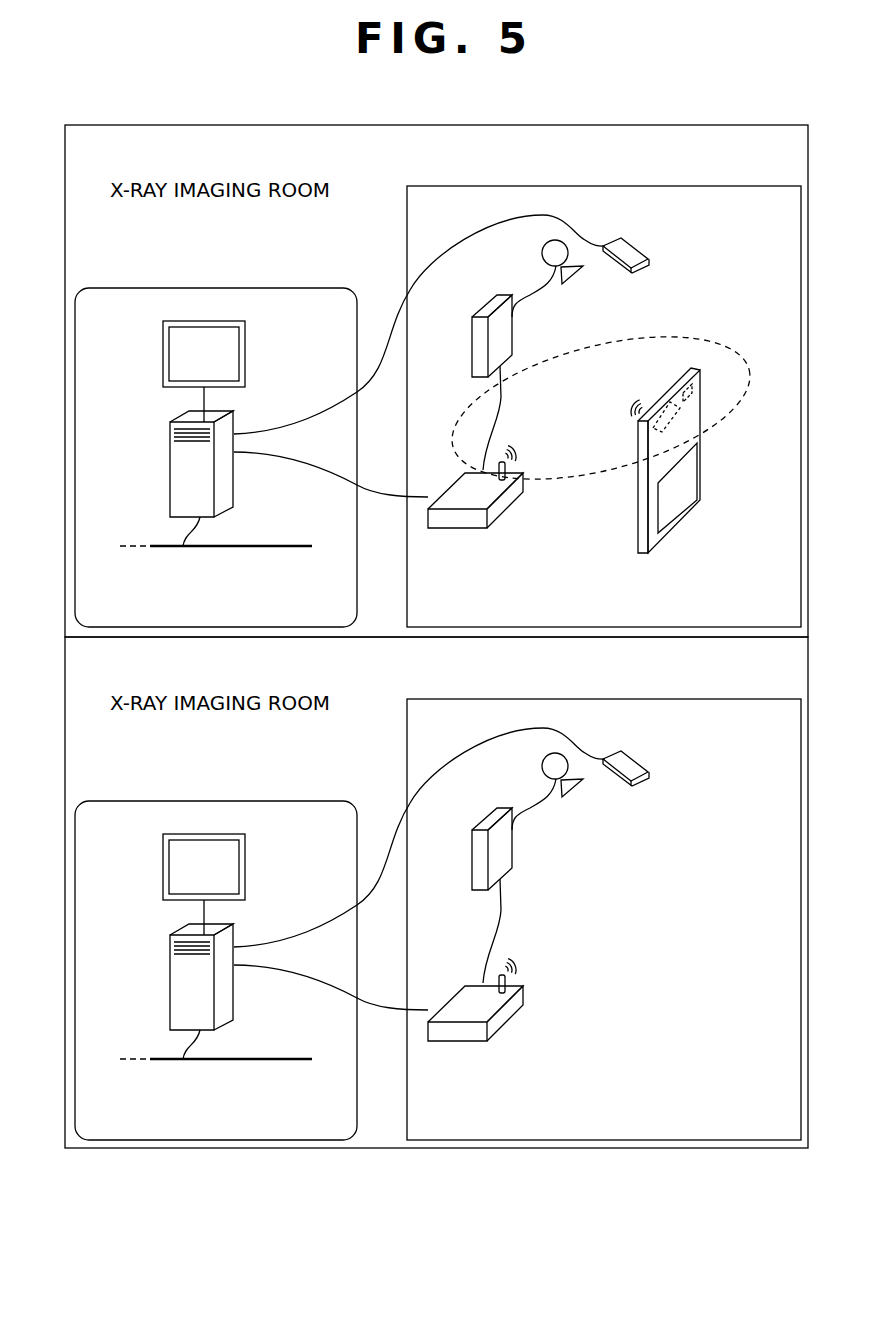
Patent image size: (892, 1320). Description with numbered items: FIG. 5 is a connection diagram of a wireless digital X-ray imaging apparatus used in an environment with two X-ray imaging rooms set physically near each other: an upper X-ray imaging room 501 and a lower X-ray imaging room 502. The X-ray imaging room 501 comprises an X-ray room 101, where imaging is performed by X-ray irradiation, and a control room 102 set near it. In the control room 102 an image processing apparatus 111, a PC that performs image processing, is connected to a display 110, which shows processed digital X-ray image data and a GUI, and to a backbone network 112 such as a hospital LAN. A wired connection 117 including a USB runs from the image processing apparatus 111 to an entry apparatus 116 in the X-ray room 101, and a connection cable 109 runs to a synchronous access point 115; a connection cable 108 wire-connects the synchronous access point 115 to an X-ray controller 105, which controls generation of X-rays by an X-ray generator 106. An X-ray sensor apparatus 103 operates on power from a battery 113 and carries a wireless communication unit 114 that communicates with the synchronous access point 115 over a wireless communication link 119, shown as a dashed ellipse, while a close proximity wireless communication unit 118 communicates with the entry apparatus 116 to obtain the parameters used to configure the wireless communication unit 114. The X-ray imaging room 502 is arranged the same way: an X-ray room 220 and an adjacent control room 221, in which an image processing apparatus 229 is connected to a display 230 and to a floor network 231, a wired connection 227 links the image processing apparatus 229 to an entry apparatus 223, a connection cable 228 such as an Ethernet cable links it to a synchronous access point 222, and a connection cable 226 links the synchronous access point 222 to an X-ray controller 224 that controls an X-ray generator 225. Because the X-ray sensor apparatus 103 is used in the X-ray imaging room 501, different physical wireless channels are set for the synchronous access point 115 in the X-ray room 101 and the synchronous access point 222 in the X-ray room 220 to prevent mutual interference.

The X-ray imaging room 501 is at (210, 125).
The X-ray imaging room 502 is at (318, 1148).
The X-ray room 101 is at (738, 186).
The control room 102 is at (318, 288).
The X-ray sensor apparatus 103 is at (694, 368).
The X-ray controller 105 is at (481, 310).
The X-ray generator 106 is at (542, 253).
The connection cable 108 is at (503, 397).
The connection cable 109 is at (383, 497).
The display 110 is at (246, 357).
The image processing apparatus 111 is at (236, 420).
The backbone network 112 is at (268, 546).
The battery 113 is at (690, 470).
The wireless communication unit 114 is at (662, 405).
The synchronous access point 115 is at (512, 470).
The entry apparatus 116 is at (640, 247).
The wired connection 117 is at (450, 245).
The close proximity wireless communication unit 118 is at (695, 386).
The wireless communication link 119 is at (630, 336).
The X-ray room 220 is at (604, 894).
The control room 221 is at (216, 945).
The synchronous access point 222 is at (534, 965).
The entry apparatus 223 is at (642, 754).
The X-ray controller 224 is at (478, 831).
The X-ray generator 225 is at (526, 790).
The connection cable 226 is at (529, 931).
The wired connection 227 is at (419, 829).
The connection cable 228 is at (378, 998).
The image processing apparatus 229 is at (238, 967).
The display 230 is at (239, 884).
The network 231 is at (216, 1032).